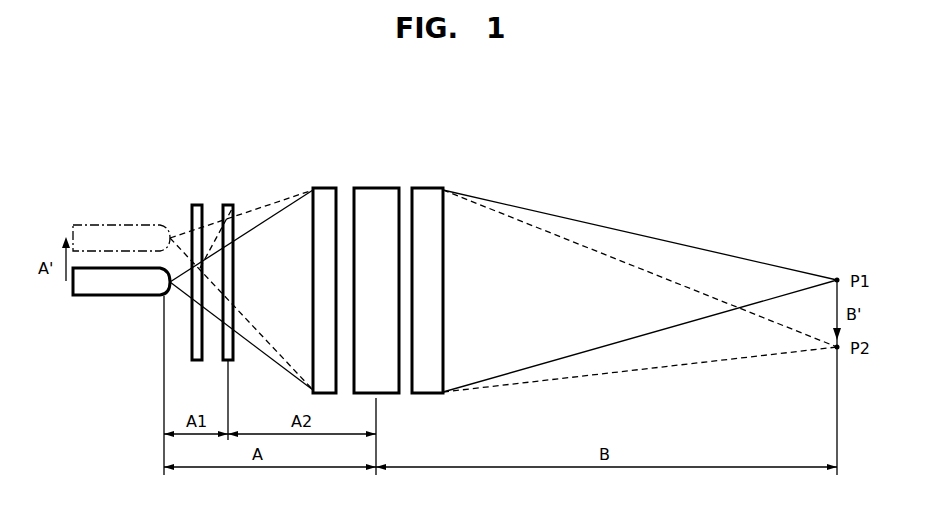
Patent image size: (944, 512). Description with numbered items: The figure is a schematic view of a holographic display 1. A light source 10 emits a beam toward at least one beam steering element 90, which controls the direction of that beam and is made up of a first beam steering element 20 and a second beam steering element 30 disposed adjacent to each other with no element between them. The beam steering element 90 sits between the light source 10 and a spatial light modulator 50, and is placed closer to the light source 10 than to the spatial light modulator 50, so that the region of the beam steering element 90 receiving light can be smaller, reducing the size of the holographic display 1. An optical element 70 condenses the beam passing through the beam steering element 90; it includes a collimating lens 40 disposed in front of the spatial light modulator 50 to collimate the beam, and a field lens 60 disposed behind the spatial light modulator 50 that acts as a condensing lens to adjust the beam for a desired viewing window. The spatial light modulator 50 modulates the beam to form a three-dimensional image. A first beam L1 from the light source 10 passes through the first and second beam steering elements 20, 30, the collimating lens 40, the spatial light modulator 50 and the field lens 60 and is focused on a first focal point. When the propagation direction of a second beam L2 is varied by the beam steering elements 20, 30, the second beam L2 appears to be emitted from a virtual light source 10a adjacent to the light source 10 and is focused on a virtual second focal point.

The holographic display 1 is at (548, 165).
The light source 10 is at (118, 296).
The virtual light source 10a is at (121, 225).
The first beam steering element 20 is at (197, 205).
The second beam steering element 30 is at (230, 205).
The collimating lens 40 is at (330, 188).
The spatial light modulator 50 is at (376, 188).
The field lens 60 is at (425, 253).
The optical element 70 is at (378, 234).
The beam steering element 90 is at (212, 239).
The first beam L1 is at (266, 353).
The second beam L2 is at (275, 200).